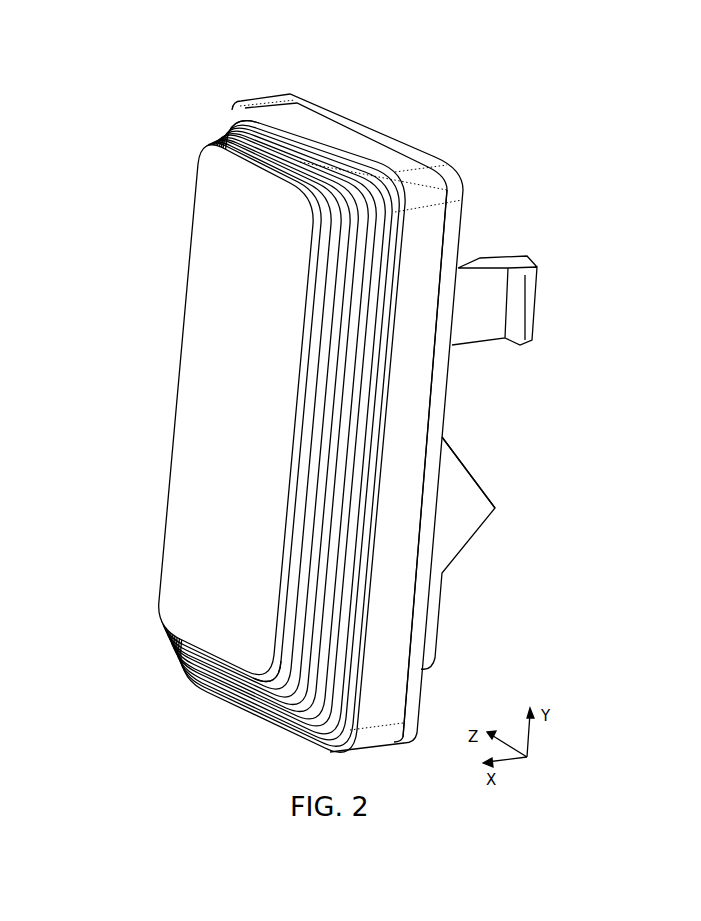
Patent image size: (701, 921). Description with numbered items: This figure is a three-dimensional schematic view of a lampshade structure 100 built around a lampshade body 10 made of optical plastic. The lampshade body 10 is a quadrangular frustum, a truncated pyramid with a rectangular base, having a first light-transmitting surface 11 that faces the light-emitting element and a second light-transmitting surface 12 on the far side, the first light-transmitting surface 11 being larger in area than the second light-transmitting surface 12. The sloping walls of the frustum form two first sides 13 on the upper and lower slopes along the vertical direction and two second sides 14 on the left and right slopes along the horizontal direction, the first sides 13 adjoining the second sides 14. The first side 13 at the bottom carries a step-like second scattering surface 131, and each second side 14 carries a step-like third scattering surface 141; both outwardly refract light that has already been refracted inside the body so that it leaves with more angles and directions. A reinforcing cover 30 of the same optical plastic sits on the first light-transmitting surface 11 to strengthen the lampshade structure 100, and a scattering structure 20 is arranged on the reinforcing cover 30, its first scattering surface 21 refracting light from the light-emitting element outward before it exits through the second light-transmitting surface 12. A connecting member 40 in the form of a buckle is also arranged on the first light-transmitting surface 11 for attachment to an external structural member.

The lampshade structure 100 is at (76, 30).
The lampshade body 10 is at (184, 182).
The first light-transmitting surface 11 is at (385, 412).
The second light-transmitting surface 12 is at (218, 408).
The first side 13 is at (282, 144).
The second scattering surface 131 is at (240, 150).
The second side 14 is at (350, 600).
The third scattering surface 141 is at (318, 600).
The scattering structure 20 is at (460, 508).
The first scattering surface 21 is at (478, 483).
The reinforcing cover 30 is at (310, 128).
The connecting member 40 is at (480, 307).